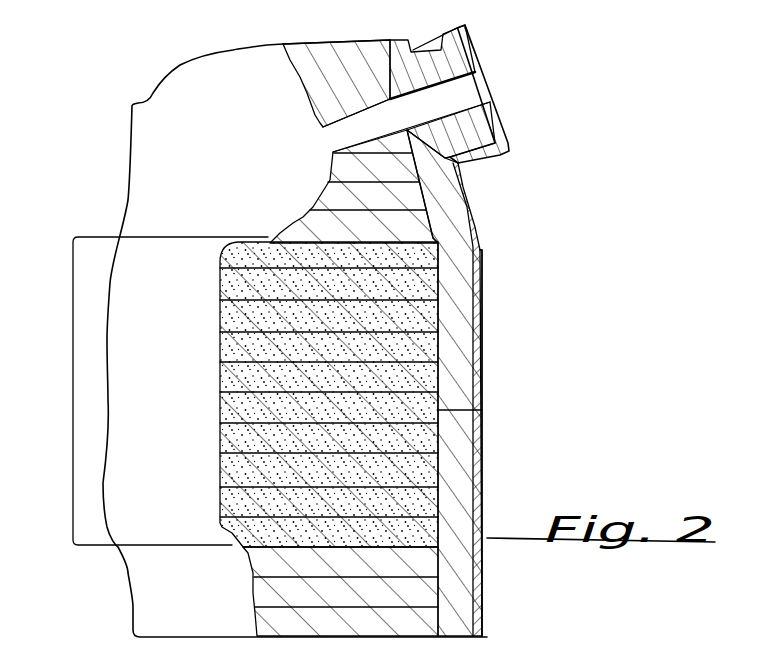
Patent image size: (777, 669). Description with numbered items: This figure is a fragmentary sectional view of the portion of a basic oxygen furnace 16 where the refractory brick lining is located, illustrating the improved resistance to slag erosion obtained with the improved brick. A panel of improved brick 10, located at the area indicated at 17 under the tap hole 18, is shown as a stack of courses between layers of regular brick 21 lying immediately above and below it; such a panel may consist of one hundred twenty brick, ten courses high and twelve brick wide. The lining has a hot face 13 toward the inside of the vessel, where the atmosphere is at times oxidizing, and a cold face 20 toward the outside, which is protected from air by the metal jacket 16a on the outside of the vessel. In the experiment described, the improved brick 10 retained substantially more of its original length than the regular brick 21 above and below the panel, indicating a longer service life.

The improved refractory brick 10 is at (240, 260).
The hot face 13 is at (301, 394).
The basic oxygen furnace 16 is at (482, 362).
The metal jacket 16a is at (482, 275).
The panel area 17 is at (73, 378).
The tap hole 18 is at (475, 160).
The cold face 20 is at (482, 410).
The regular brick 21 is at (306, 217).